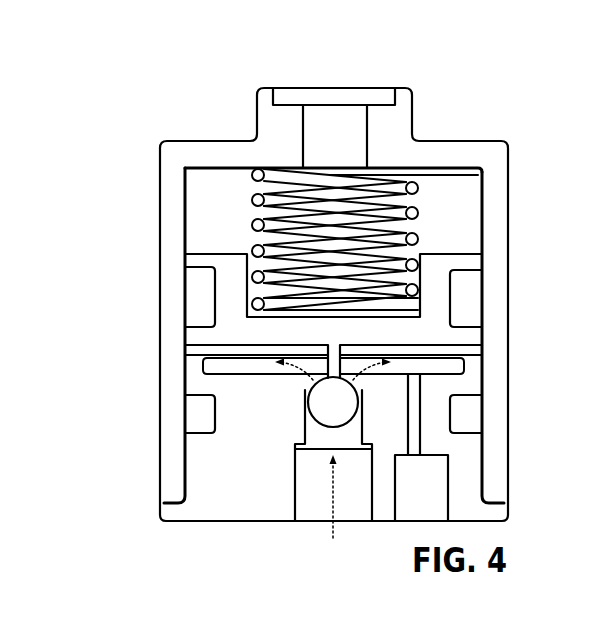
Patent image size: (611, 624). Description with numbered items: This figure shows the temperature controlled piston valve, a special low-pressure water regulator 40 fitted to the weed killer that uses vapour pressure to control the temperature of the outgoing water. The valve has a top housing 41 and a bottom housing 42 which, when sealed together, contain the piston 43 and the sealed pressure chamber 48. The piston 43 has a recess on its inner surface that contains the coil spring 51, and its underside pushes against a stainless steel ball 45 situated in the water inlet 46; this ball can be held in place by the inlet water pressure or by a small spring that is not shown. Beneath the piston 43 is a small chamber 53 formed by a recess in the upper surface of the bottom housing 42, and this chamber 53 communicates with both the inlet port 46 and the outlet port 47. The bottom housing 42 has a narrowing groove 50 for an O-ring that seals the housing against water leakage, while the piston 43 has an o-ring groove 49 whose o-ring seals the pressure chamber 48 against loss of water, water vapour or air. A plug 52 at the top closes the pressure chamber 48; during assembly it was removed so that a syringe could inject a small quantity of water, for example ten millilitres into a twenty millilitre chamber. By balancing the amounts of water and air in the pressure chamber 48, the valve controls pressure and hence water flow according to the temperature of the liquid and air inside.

The low-pressure water regulator 40 is at (311, 321).
The top housing 41 is at (178, 153).
The bottom housing 42 is at (380, 497).
The piston 43 is at (233, 317).
The stainless steel ball 45 is at (323, 403).
The water inlet 46 is at (305, 490).
The outlet port 47 is at (427, 492).
The pressure chamber 48 is at (346, 301).
The o-ring groove 49 is at (463, 297).
The narrowing groove 50 is at (465, 417).
The coil spring 51 is at (332, 223).
The plug 52 is at (347, 92).
The small chamber 53 is at (422, 367).